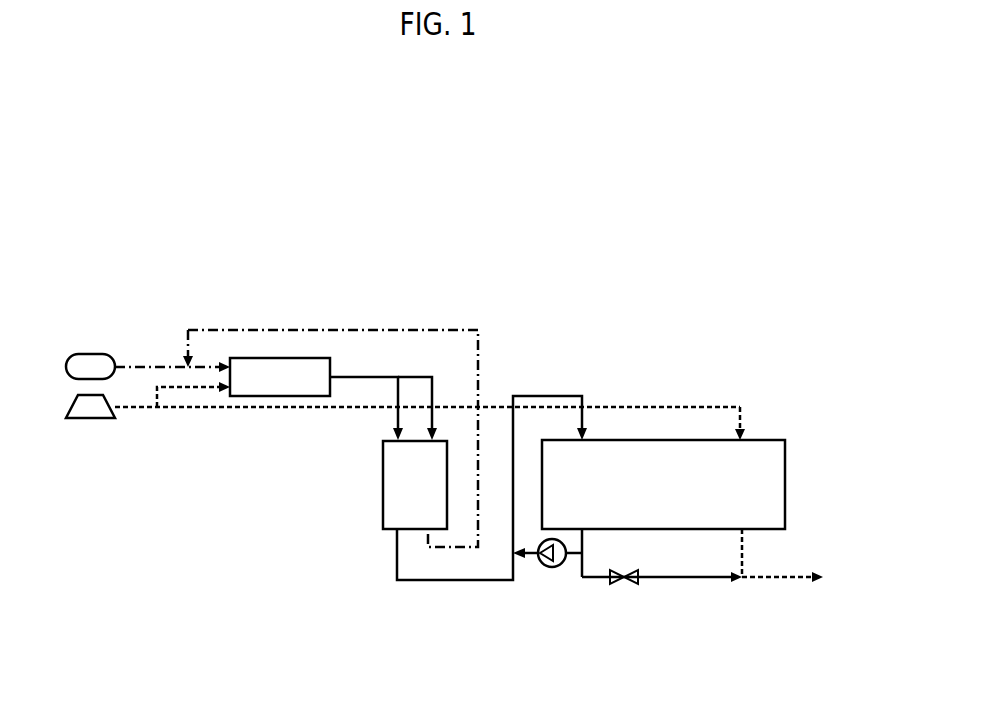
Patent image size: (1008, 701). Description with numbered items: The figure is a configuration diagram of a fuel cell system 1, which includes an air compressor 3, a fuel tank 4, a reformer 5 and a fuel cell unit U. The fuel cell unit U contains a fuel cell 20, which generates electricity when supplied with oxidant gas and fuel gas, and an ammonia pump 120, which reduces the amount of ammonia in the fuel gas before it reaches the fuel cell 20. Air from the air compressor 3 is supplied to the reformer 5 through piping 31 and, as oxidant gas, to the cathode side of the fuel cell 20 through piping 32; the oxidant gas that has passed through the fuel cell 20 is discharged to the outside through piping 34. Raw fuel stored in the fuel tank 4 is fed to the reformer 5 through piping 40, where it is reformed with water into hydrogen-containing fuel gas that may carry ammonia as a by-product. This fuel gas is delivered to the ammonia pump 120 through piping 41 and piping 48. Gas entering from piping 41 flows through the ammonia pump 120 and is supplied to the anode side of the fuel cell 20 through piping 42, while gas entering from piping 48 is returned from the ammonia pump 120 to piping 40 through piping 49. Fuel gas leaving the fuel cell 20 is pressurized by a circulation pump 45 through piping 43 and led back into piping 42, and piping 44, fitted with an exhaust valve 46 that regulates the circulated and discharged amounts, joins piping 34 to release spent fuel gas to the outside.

The fuel cell system 1 is at (708, 321).
The air compressor 3 is at (88, 420).
The fuel tank 4 is at (89, 353).
The reformer 5 is at (333, 363).
The fuel cell 20 is at (770, 440).
The piping 31 is at (181, 394).
The piping 32 is at (720, 406).
The piping 34 is at (745, 552).
The piping 40 is at (142, 352).
The piping 41 is at (395, 429).
The piping 42 is at (468, 582).
The piping 43 is at (578, 558).
The piping 44 is at (676, 580).
The circulation pump 45 is at (552, 568).
The exhaust valve 46 is at (625, 586).
The piping 48 is at (435, 429).
The piping 49 is at (433, 330).
The ammonia pump 120 is at (383, 503).
The fuel cell unit U is at (805, 430).